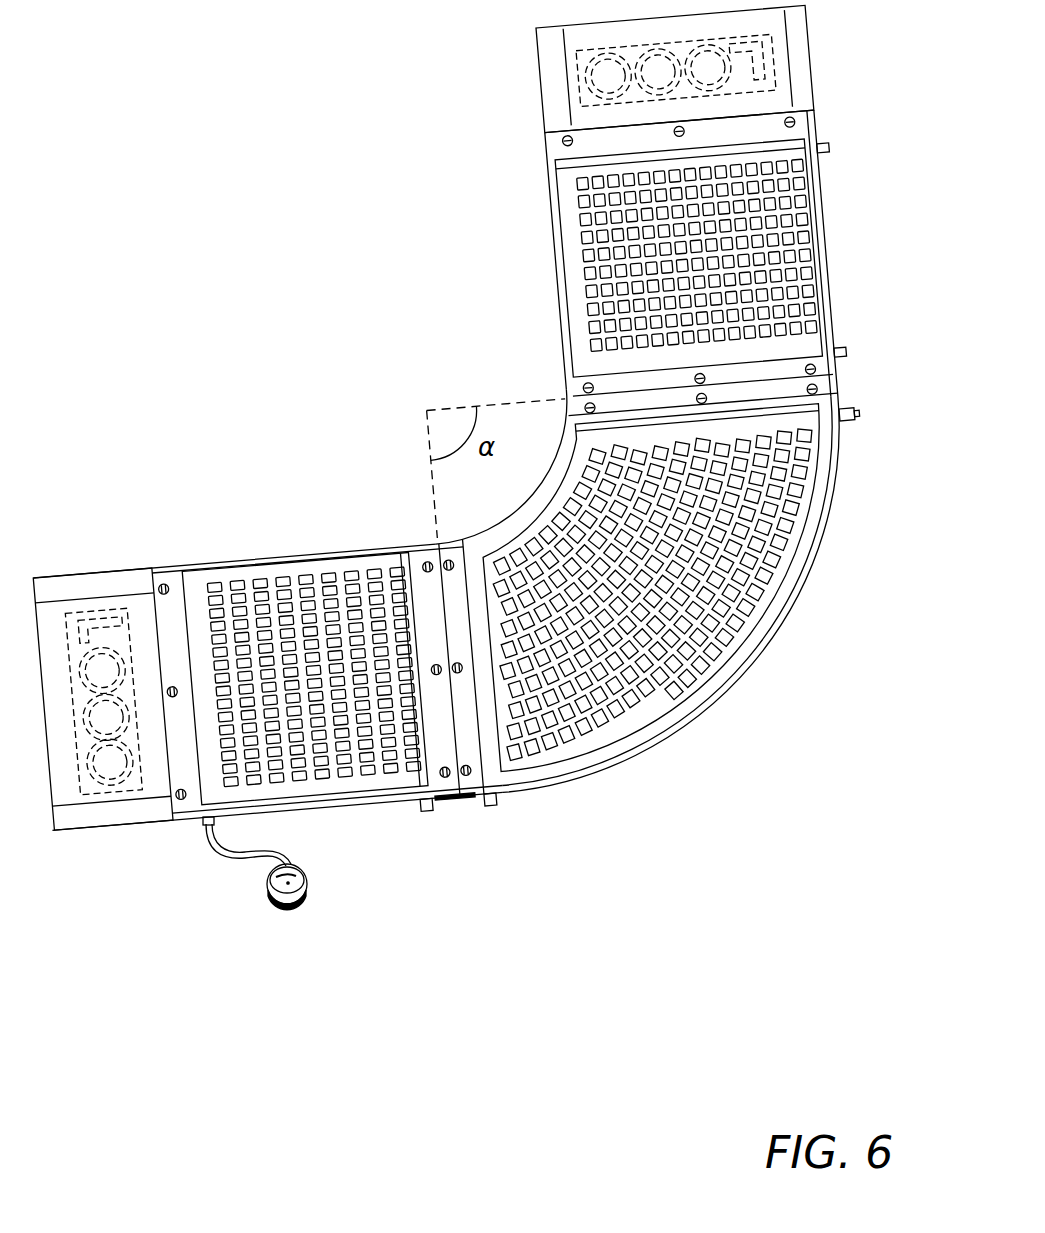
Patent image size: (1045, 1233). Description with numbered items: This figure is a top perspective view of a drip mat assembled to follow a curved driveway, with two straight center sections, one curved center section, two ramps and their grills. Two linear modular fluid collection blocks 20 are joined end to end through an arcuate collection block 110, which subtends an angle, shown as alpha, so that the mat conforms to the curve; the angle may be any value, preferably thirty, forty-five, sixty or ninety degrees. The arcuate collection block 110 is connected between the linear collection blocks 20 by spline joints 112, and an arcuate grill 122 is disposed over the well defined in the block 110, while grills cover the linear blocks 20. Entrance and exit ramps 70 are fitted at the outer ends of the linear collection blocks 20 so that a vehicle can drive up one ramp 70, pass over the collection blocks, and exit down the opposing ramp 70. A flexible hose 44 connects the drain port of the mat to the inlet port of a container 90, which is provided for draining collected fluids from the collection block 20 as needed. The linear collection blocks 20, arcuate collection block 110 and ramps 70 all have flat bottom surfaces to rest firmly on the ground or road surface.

The modular fluid collection block 20 is at (565, 258).
The flexible hose 44 is at (210, 853).
The ramp 70 is at (548, 90).
The container 90 is at (279, 945).
The arcuate collection block 110 is at (826, 530).
The spline joint 112 is at (798, 353).
The arcuate grill 122 is at (728, 608).